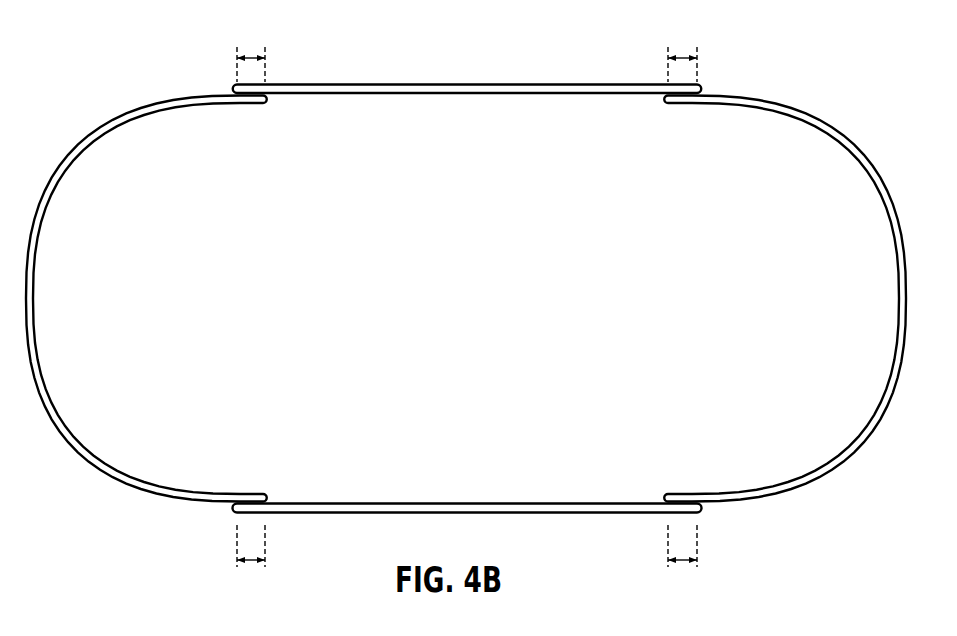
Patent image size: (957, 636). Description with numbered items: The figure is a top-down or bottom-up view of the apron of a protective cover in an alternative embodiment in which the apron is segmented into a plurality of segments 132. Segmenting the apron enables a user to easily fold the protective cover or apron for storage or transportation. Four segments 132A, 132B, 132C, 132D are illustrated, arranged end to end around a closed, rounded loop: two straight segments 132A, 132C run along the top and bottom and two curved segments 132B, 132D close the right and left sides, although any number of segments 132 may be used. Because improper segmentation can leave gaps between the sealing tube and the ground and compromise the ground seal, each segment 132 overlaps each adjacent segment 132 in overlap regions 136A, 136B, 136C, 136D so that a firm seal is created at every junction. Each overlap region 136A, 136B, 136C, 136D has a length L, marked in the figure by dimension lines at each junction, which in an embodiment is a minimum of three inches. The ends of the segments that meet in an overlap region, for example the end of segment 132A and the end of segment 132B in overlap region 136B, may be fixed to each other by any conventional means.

The segments 132 is at (153, 95).
The segment 132A is at (497, 128).
The segment 132B is at (848, 251).
The segment 132C is at (497, 484).
The segment 132D is at (158, 300).
The overlap region 136A is at (243, 107).
The overlap region 136B is at (683, 107).
The overlap region 136C is at (680, 480).
The overlap region 136D is at (267, 483).